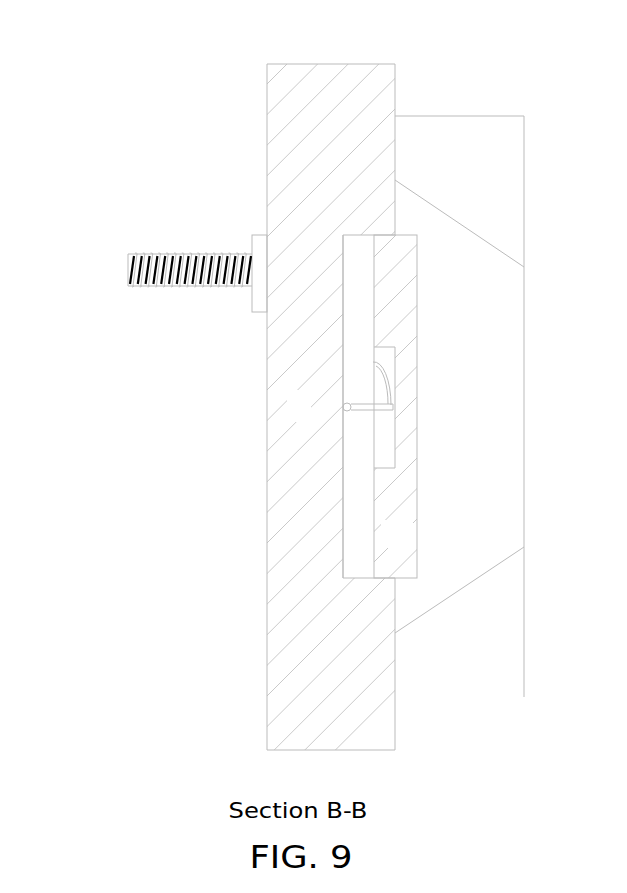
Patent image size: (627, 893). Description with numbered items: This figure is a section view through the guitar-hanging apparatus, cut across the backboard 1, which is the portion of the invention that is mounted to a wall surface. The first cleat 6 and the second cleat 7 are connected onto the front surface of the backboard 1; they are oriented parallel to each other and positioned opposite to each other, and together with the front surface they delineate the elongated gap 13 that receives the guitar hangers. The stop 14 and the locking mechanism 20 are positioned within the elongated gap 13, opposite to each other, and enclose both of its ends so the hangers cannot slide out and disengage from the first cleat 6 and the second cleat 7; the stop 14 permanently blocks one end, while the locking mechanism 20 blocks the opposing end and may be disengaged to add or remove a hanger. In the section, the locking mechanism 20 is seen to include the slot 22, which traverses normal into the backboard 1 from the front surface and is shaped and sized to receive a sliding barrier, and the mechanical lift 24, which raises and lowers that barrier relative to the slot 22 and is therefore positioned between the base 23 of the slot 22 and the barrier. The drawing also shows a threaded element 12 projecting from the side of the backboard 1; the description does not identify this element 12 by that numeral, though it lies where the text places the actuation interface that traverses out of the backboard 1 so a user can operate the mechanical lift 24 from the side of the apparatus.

The backboard 1 is at (308, 418).
The first cleat 6 is at (424, 150).
The second cleat 7 is at (431, 686).
The screw 12 is at (128, 271).
The elongated gap 13 is at (523, 404).
The stop 14 is at (501, 315).
The locking mechanism 20 is at (423, 233).
The slot 22 is at (412, 548).
The base 23 is at (341, 350).
The mechanical lift 24 is at (401, 393).